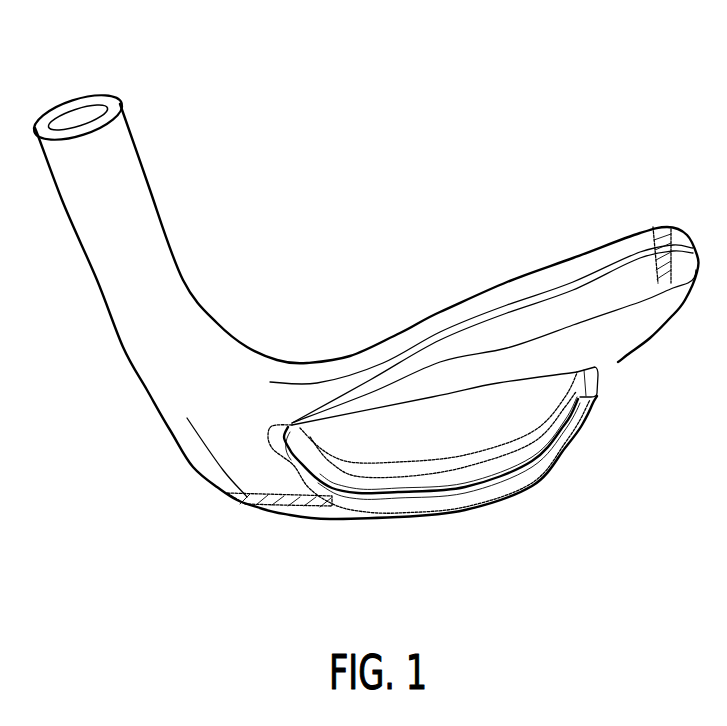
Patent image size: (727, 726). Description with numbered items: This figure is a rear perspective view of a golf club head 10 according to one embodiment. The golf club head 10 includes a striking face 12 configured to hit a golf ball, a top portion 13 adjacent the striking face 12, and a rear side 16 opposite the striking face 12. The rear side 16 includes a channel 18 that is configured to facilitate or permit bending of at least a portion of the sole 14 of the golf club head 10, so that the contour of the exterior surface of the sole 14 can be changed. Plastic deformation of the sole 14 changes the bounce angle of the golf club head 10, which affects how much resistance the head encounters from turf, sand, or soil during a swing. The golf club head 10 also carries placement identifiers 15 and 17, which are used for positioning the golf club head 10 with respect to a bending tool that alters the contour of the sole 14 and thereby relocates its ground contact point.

The golf club head 10 is at (468, 110).
The striking face 12 is at (462, 300).
The top portion 13 is at (502, 293).
The sole 14 is at (329, 513).
The placement identifier 15 is at (282, 512).
The rear side 16 is at (628, 343).
The placement identifier 17 is at (666, 232).
The channel 18 is at (530, 467).